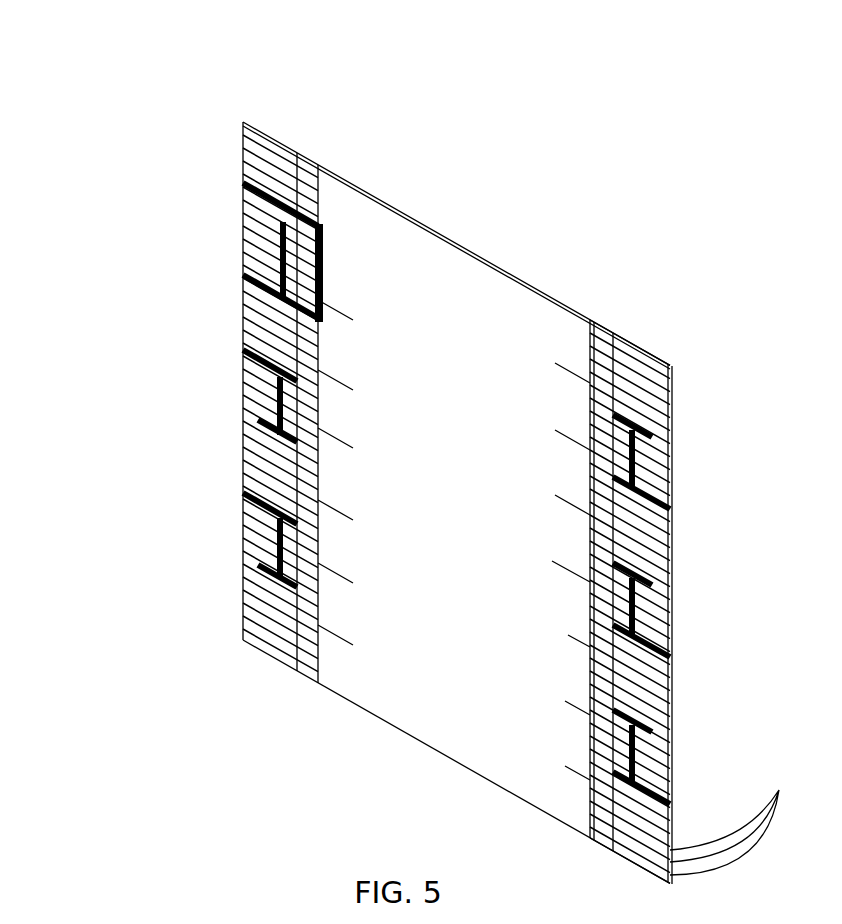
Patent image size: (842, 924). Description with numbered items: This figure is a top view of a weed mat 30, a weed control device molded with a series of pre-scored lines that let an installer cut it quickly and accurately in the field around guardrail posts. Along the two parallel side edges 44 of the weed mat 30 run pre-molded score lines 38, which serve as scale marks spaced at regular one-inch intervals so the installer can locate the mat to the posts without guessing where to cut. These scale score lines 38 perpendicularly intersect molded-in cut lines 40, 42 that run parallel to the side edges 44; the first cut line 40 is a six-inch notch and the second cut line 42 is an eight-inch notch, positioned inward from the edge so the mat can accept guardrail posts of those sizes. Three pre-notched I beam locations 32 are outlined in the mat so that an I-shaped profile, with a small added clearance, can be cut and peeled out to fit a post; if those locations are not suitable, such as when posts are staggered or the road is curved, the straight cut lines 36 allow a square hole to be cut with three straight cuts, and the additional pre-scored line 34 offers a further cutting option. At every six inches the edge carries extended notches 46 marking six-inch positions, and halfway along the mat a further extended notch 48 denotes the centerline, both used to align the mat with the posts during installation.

The weed mat 30 is at (507, 563).
The pre-notched I beam locations 32 is at (268, 552).
The pre-scored line 34 is at (255, 505).
The straight cut lines 36 is at (245, 188).
The score lines 38 is at (779, 792).
The cut line 40 is at (295, 620).
The cut line 42 is at (597, 337).
The side edges 44 is at (667, 590).
The extended notches 46 is at (330, 235).
The further extended notch 48 is at (335, 440).